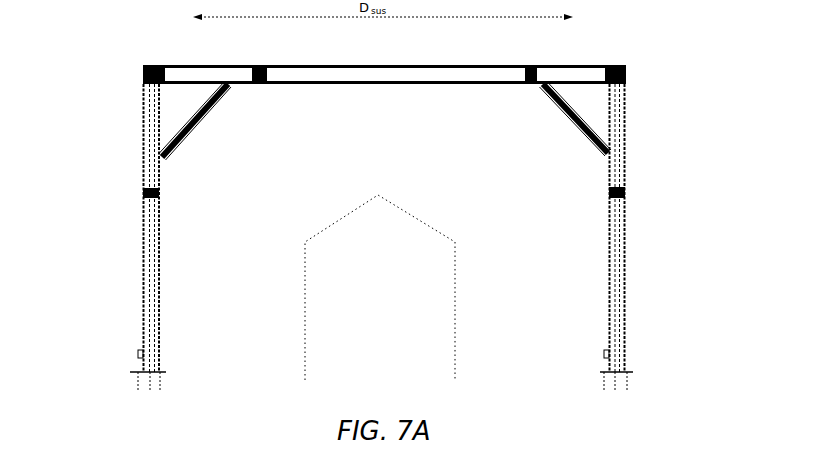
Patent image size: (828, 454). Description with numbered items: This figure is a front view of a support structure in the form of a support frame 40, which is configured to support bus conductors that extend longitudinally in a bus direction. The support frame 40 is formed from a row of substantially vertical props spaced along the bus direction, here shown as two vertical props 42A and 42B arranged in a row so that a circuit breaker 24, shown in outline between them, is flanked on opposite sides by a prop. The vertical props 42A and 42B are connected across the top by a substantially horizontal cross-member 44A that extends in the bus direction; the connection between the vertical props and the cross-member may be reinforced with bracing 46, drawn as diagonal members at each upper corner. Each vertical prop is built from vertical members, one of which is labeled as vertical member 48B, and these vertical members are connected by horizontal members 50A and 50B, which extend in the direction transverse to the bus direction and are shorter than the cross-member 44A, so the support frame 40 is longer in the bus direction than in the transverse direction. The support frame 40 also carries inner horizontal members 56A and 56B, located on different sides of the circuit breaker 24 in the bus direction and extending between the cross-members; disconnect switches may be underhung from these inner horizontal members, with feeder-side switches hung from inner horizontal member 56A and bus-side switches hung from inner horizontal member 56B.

The support frame 40 is at (74, 118).
The vertical prop 42A is at (130, 244).
The vertical prop 42B is at (642, 246).
The cross-member 44A is at (418, 65).
The bracing 46 is at (187, 121).
The vertical member 48B is at (143, 307).
The horizontal member 50A is at (143, 66).
The horizontal member 50B is at (143, 188).
The inner horizontal member 56A is at (268, 66).
The inner horizontal member 56B is at (533, 66).
The circuit breaker 24 is at (478, 315).